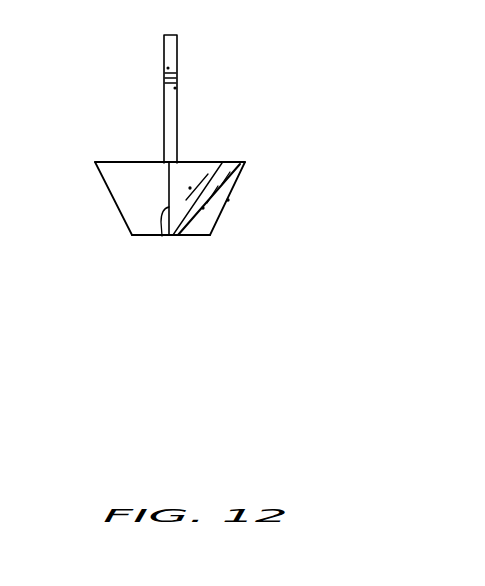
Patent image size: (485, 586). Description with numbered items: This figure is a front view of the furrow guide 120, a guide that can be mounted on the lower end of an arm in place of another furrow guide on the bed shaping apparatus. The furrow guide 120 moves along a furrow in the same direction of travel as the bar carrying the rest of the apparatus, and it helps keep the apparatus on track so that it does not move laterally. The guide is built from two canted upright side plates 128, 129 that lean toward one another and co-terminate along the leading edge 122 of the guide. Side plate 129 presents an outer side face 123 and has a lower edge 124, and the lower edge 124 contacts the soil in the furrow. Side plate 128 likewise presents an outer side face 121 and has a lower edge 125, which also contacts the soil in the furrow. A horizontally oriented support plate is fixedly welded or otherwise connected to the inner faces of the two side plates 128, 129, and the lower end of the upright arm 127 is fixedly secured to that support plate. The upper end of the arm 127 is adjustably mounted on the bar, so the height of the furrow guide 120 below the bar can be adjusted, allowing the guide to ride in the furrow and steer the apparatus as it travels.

The furrow guide 120 is at (303, 80).
The outer side face 121 is at (220, 200).
The leading edge 122 is at (162, 236).
The outer side face 123 is at (108, 182).
The lower edge 124 is at (132, 237).
The lower edge 125 is at (198, 236).
The arm 127 is at (177, 58).
The side plate 128 is at (237, 158).
The side plate 129 is at (137, 156).